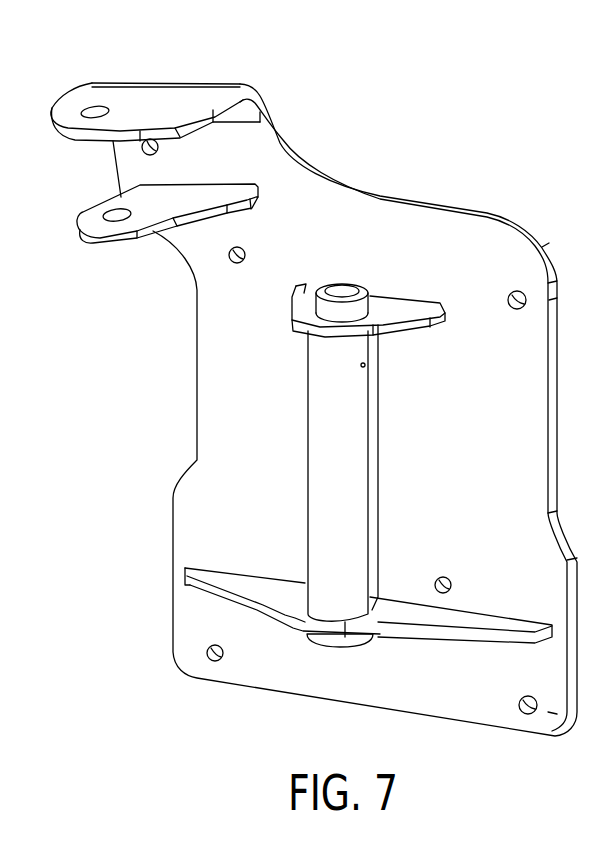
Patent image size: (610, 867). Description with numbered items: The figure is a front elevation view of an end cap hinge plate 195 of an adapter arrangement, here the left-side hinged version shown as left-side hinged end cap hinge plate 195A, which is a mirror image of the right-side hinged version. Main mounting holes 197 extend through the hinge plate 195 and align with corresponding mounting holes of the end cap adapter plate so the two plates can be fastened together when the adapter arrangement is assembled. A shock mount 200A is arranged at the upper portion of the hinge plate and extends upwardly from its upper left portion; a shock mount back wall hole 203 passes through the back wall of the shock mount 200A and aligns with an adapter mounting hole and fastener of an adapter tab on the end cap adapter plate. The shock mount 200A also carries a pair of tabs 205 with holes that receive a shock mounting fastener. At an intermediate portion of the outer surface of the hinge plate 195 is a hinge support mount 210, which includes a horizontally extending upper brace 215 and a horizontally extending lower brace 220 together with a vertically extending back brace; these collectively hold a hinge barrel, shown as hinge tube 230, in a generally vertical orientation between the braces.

The end cap hinge plate 195 is at (345, 402).
The left-side hinged end cap hinge plate 195A is at (456, 170).
The main mounting holes 197 is at (242, 258).
The shock mount 200A is at (188, 72).
The shock mount back wall hole 203 is at (148, 152).
The tabs 205 is at (133, 98).
The hinge support mount 210 is at (376, 652).
The upper brace 215 is at (372, 300).
The lower brace 220 is at (279, 612).
The hinge tube 230 is at (388, 498).